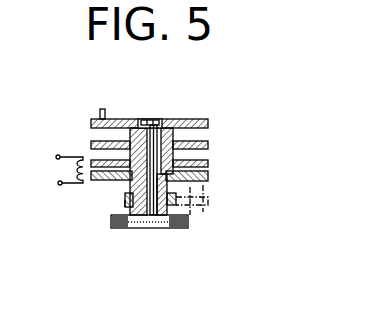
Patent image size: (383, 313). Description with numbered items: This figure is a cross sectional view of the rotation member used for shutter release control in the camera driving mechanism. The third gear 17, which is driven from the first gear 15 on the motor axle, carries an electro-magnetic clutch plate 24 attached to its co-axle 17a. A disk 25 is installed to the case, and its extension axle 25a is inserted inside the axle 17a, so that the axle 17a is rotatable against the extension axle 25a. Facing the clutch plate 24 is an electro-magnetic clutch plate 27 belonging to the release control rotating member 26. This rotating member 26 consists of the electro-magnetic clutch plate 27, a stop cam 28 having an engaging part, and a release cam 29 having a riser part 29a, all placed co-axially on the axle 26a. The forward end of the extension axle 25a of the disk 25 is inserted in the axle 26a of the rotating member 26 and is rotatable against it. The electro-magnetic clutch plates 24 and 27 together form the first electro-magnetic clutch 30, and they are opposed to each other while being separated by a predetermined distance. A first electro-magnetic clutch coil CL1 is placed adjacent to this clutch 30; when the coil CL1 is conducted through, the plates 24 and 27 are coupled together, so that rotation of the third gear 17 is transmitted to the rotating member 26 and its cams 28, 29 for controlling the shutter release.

The first gear 15 is at (203, 212).
The third gear 17 is at (124, 198).
The co-axle 17a is at (125, 190).
The electro-magnetic clutch plate 24 is at (212, 179).
The disk 25 is at (148, 229).
The extension axle 25a is at (147, 120).
The release control rotating member 26 is at (127, 118).
The axle 26a is at (168, 127).
The electro-magnetic clutch plate 27 is at (207, 165).
The stop cam 28 is at (207, 146).
The release cam 29 is at (205, 125).
The riser part 29a is at (97, 116).
The first electro-magnetic clutch 30 is at (206, 191).
The first electro-magnetic clutch coil CL1 is at (54, 157).